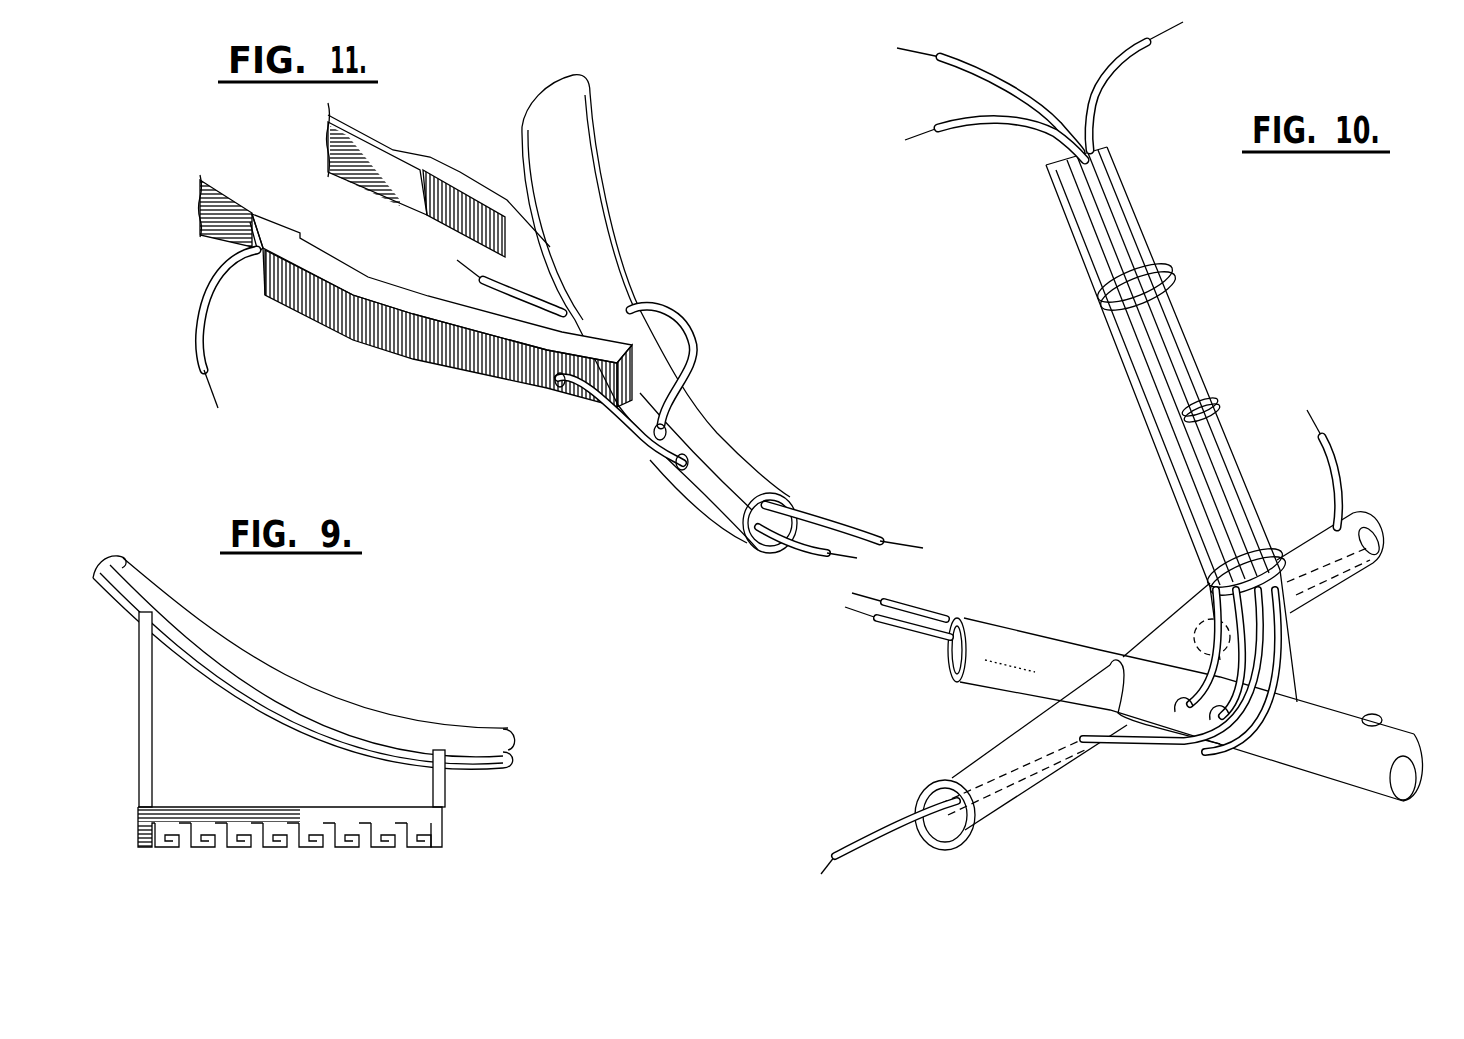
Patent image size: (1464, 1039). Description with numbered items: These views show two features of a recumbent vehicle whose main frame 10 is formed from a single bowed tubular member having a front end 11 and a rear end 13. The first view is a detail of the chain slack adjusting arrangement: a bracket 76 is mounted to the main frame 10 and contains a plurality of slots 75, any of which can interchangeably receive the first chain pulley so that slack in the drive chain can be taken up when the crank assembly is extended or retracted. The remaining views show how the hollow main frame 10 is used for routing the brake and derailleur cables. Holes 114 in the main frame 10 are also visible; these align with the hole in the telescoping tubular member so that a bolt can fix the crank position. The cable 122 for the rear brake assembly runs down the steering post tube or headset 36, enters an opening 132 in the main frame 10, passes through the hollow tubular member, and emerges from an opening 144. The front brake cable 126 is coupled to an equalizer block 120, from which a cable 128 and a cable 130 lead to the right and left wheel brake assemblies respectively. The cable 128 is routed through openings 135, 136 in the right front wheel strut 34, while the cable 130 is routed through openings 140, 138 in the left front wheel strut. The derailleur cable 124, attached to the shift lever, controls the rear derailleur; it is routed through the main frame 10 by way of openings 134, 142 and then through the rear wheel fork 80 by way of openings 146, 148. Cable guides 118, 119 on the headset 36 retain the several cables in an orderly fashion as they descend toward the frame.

In FIG. 11, the main frame 10 is at (573, 140).
In FIG. 9, the main frame 10 is at (327, 698).
In FIG. 10, the main frame 10 is at (1386, 752).
In FIG. 10, the front end 11 is at (1373, 805).
In FIG. 11, the rear end 13 is at (583, 59).
In FIG. 10, the front wheel strut 34 is at (978, 755).
In FIG. 10, the steering post tube or headset 36 is at (1077, 237).
In FIG. 9, the slots 75 is at (410, 844).
In FIG. 9, the bracket 76 is at (433, 817).
In FIG. 11, the rear wheel fork 80 is at (413, 357).
In FIG. 10, the holes 114 is at (1376, 713).
In FIG. 10, the cable guide 118 is at (1173, 273).
In FIG. 10, the cable guide 119 is at (1203, 573).
In FIG. 10, the equalizer block 120 is at (1213, 398).
In FIG. 11, the cable 122 is at (678, 310).
In FIG. 10, the cable 122 is at (972, 60).
In FIG. 11, the cable 124 is at (195, 352).
In FIG. 10, the cable 124 is at (972, 132).
In FIG. 10, the cable 126 is at (1123, 67).
In FIG. 10, the cable 128 is at (1133, 735).
In FIG. 10, the cable 130 is at (1340, 473).
In FIG. 10, the opening 132 is at (1208, 748).
In FIG. 10, the opening 134 is at (1178, 713).
In FIG. 10, the opening 135 is at (1083, 746).
In FIG. 10, the opening 136 is at (950, 811).
In FIG. 10, the opening 138 is at (1387, 547).
In FIG. 10, the opening 140 is at (1205, 654).
In FIG. 11, the opening 142 is at (690, 460).
In FIG. 11, the opening 144 is at (670, 437).
In FIG. 11, the opening 146 is at (560, 386).
In FIG. 11, the opening 148 is at (258, 262).